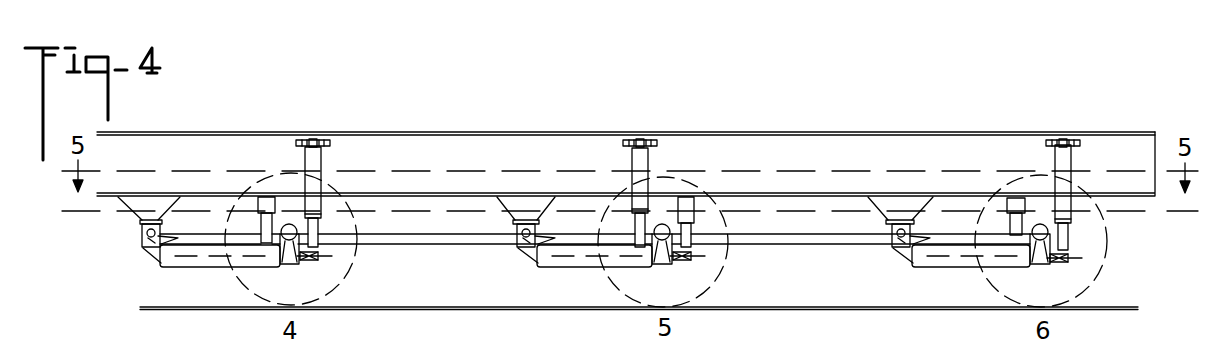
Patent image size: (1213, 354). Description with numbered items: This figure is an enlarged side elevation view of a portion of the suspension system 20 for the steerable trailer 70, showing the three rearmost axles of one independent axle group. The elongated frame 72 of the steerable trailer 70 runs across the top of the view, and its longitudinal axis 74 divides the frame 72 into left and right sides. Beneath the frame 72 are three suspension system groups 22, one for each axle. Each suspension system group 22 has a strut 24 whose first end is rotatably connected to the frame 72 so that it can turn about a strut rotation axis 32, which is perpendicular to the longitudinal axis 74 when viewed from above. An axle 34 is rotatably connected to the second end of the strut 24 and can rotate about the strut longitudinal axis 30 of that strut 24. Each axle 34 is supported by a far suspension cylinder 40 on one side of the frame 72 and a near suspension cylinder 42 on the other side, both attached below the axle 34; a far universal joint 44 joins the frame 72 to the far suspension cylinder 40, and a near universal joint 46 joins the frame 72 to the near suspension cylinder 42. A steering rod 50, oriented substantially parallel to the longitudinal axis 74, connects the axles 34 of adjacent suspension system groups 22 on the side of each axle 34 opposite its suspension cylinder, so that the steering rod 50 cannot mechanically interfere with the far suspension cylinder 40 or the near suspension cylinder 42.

The suspension system 20 is at (910, 57).
The suspension system group 22 is at (330, 122).
The strut 24 is at (215, 260).
The strut longitudinal axis 30 is at (253, 257).
The strut rotation axis 32 is at (152, 240).
The axle 34 is at (300, 262).
The far suspension cylinder 40 is at (320, 193).
The near suspension cylinder 42 is at (264, 203).
The far universal joint 44 is at (308, 140).
The near universal joint 46 is at (635, 142).
The steering rod 50 is at (452, 237).
The steerable trailer 70 is at (432, 122).
The frame 72 is at (210, 132).
The longitudinal axis 74 is at (507, 171).